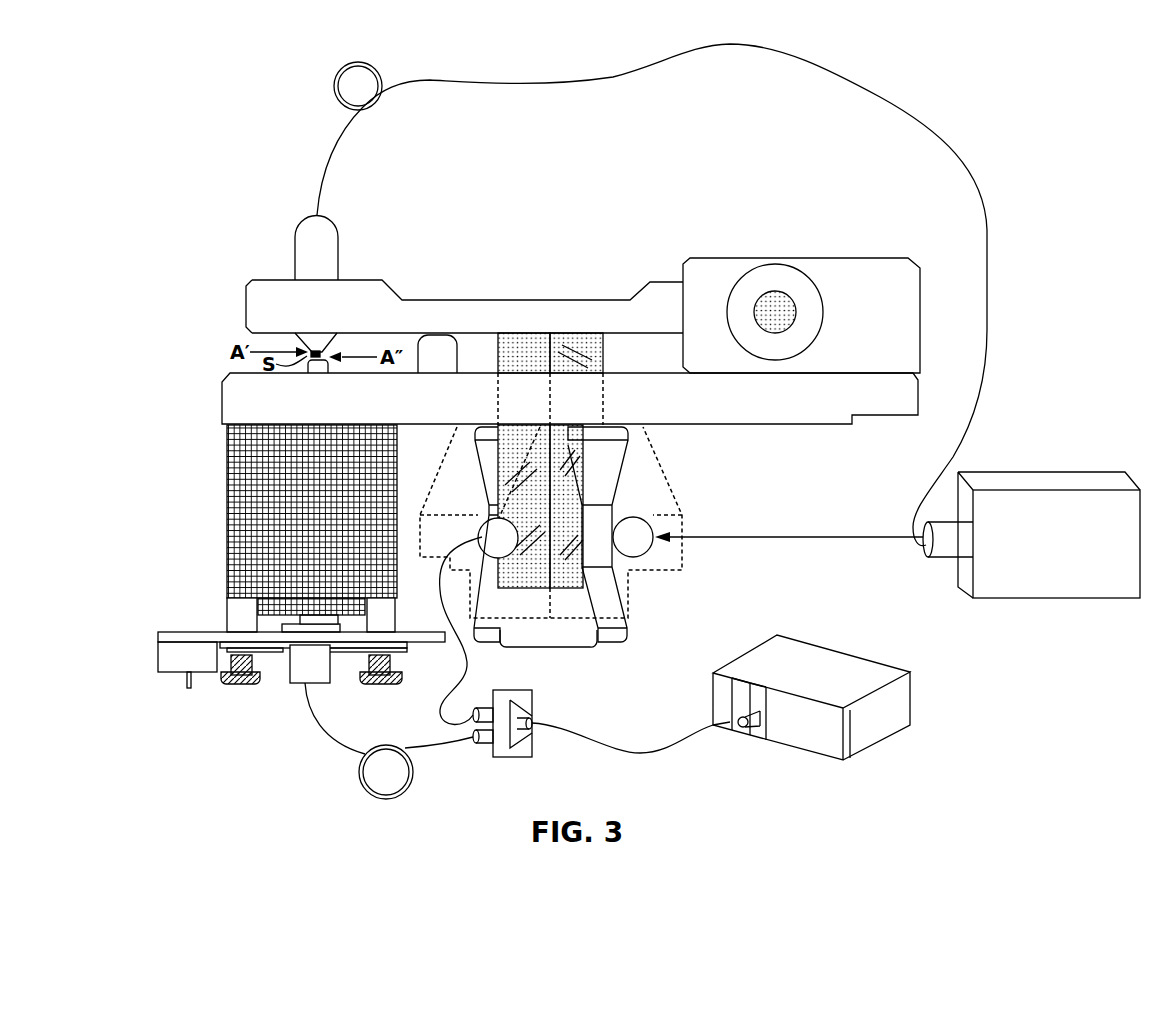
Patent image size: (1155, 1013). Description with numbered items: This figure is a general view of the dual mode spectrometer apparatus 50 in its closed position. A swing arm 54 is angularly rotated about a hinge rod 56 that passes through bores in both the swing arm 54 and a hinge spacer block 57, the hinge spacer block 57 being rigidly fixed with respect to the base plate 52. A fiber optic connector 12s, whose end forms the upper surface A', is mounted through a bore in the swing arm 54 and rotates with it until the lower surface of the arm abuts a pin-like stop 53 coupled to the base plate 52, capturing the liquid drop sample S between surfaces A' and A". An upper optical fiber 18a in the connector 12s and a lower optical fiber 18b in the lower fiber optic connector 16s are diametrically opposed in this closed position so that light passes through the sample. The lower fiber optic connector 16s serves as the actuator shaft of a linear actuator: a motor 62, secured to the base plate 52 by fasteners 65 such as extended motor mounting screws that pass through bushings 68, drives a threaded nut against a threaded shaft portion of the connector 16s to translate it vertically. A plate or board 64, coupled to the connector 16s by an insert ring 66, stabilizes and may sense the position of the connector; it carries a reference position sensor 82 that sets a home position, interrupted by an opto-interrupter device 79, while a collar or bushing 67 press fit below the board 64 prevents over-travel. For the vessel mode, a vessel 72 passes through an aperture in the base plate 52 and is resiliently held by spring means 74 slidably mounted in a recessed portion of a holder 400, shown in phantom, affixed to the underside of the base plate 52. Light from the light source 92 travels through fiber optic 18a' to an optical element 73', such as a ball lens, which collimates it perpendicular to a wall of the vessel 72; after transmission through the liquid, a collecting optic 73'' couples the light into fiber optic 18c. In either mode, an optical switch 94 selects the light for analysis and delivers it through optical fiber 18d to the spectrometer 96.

The dual mode spectrometer apparatus 50 is at (284, 106).
The upper optical fiber 18a is at (652, 295).
The fiber optic connector 12s is at (340, 241).
The swing arm 54 is at (545, 299).
The hinge rod 56 is at (765, 307).
The hinge spacer block 57 is at (893, 257).
The base plate 52 is at (698, 427).
The stop 53 is at (437, 354).
The vessel 72 is at (550, 475).
The lower fiber optic connector 16s is at (318, 366).
The motor 62 is at (225, 498).
The bushings 68 is at (235, 617).
The plate or board 64 is at (185, 632).
The insert ring 66 is at (292, 644).
The reference position sensor 82 is at (187, 657).
The opto-interrupter device 79 is at (183, 675).
The fasteners 65 is at (243, 685).
The collar or bushing 67 is at (310, 664).
The lower optical fiber 18b is at (372, 747).
The collecting optic 73'' is at (461, 503).
The fiber optic 18c is at (466, 668).
The holder 400 is at (667, 486).
The spring means 74 is at (608, 641).
The optical element 73' is at (662, 560).
The fiber optic 18a' is at (789, 562).
The light source 92 is at (1052, 482).
The optical switch 94 is at (510, 757).
The optical fiber 18d is at (645, 755).
The spectrometer 96 is at (882, 730).